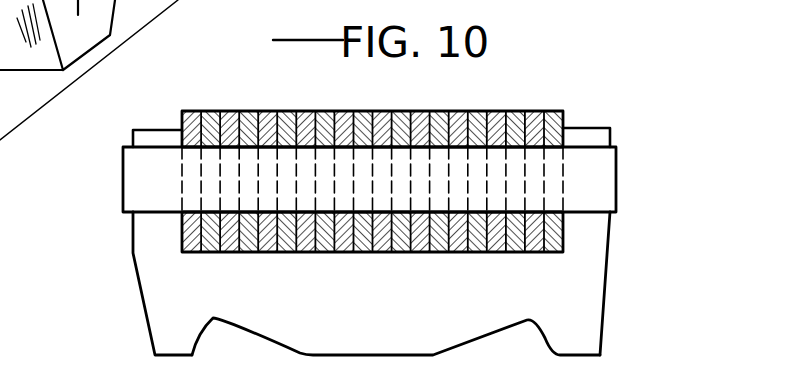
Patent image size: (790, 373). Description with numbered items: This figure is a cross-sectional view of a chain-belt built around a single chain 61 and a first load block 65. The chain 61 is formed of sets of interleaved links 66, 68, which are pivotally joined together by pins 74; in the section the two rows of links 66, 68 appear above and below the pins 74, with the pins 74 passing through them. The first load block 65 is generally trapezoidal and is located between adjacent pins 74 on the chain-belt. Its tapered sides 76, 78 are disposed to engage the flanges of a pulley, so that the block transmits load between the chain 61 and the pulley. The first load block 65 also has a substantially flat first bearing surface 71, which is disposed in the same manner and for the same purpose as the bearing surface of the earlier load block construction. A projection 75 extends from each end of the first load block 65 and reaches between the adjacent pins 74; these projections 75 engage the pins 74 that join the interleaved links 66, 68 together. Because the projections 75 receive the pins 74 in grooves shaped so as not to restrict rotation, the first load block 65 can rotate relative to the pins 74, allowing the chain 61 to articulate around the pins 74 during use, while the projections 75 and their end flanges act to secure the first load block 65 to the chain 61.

The chain 61 is at (372, 96).
The first load block 65 is at (363, 288).
The interleaved links 66 is at (243, 72).
The interleaved links 68 is at (280, 111).
The first bearing surface 71 is at (230, 253).
The pin 74 is at (600, 175).
The projection 75 is at (148, 140).
The tapered side 76 is at (138, 310).
The tapered side 78 is at (580, 320).